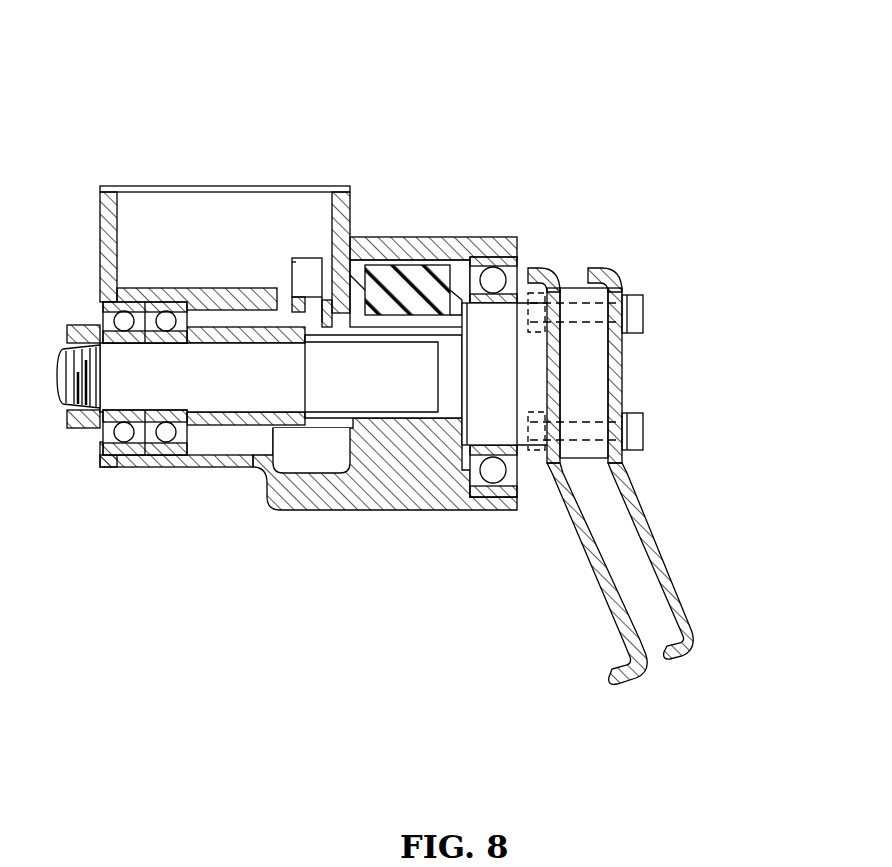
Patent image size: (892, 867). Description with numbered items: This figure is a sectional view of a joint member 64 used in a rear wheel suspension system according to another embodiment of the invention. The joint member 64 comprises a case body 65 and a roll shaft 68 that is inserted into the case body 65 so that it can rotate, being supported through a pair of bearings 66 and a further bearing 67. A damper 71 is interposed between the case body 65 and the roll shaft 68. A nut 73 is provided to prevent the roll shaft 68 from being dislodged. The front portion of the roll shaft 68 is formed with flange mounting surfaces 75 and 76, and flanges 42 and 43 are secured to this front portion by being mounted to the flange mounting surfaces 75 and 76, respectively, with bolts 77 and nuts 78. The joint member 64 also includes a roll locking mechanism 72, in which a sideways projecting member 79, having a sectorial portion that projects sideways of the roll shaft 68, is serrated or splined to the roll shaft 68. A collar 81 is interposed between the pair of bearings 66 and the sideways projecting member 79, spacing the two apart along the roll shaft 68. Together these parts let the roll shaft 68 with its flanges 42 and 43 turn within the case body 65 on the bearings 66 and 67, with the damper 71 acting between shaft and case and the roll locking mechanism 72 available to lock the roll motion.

The joint member 64 is at (254, 104).
The case body 65 is at (293, 510).
The bearings 66 is at (118, 455).
The bearing 67 is at (470, 508).
The roll shaft 68 is at (568, 287).
The damper 71 is at (406, 248).
The roll locking mechanism 72 is at (310, 248).
The nut 73 is at (83, 428).
The flange mounting surface 75 is at (617, 365).
The flange mounting surface 76 is at (545, 367).
The bolts 77 is at (643, 312).
The nuts 78 is at (540, 290).
The sideways projecting member 79 is at (292, 260).
The collar 81 is at (252, 440).
The flange 42 is at (683, 580).
The flange 43 is at (612, 615).